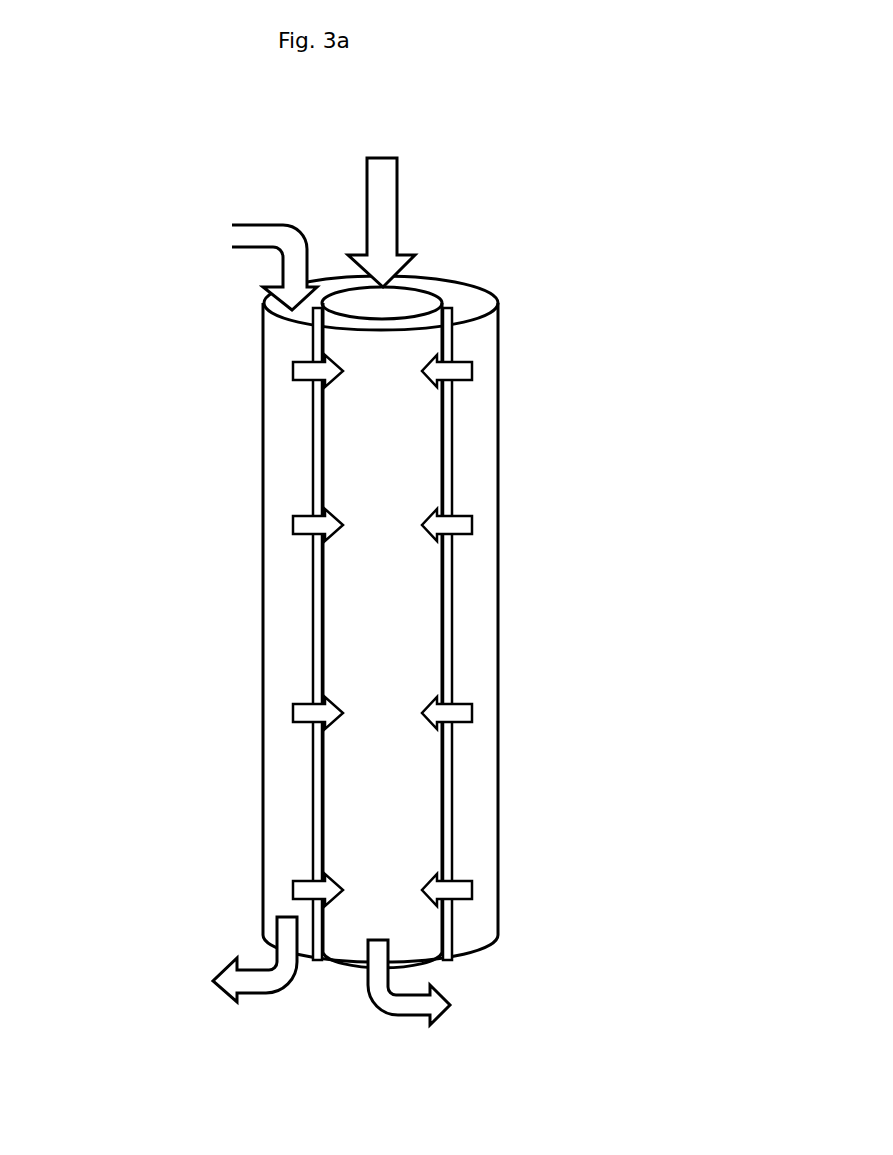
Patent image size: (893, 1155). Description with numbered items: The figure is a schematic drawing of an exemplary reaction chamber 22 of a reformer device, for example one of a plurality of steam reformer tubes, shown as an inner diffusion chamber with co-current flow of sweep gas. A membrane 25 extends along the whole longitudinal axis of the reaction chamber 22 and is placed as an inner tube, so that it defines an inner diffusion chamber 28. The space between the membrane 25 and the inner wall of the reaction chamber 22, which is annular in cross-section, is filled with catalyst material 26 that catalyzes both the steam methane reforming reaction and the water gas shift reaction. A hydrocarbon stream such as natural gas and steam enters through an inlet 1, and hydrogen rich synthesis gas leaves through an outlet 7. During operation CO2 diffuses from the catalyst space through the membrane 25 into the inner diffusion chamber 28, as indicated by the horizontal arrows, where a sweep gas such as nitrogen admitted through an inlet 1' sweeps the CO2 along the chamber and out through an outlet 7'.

The inlet 1 is at (188, 267).
The inlet 1' is at (395, 200).
The outlet 7 is at (202, 959).
The outlet 7' is at (421, 1009).
The reaction chamber 22 is at (508, 305).
The membrane 25 is at (443, 283).
The catalyst material 26 is at (265, 773).
The inner diffusion chamber 28 is at (360, 773).